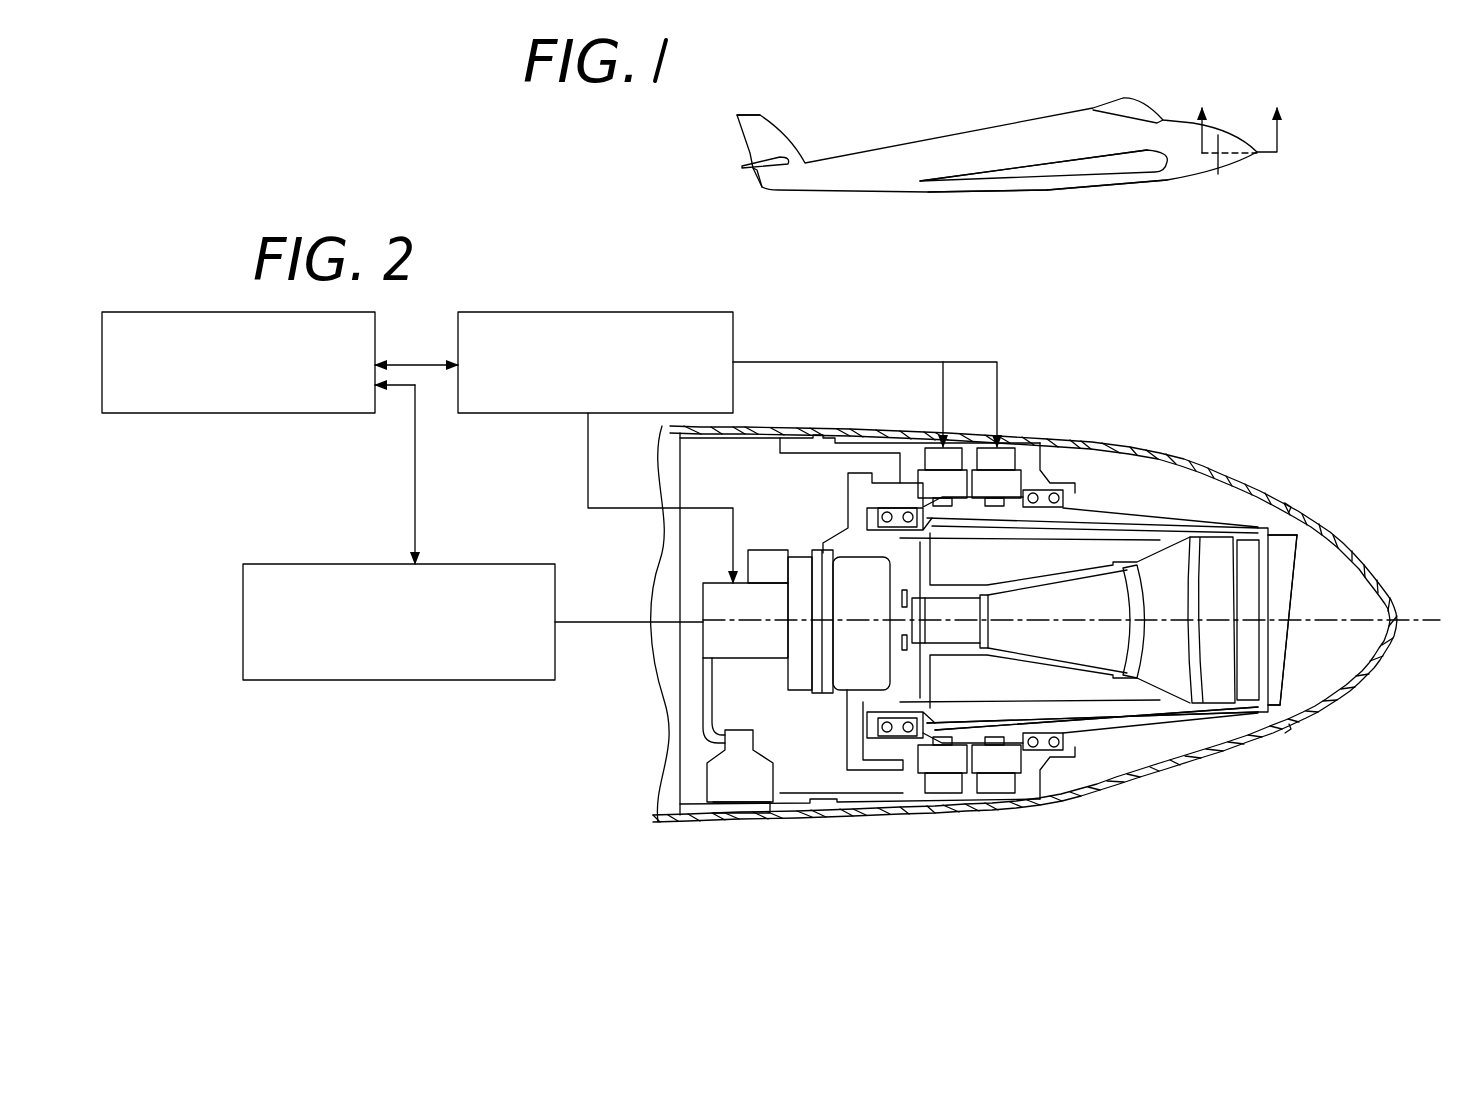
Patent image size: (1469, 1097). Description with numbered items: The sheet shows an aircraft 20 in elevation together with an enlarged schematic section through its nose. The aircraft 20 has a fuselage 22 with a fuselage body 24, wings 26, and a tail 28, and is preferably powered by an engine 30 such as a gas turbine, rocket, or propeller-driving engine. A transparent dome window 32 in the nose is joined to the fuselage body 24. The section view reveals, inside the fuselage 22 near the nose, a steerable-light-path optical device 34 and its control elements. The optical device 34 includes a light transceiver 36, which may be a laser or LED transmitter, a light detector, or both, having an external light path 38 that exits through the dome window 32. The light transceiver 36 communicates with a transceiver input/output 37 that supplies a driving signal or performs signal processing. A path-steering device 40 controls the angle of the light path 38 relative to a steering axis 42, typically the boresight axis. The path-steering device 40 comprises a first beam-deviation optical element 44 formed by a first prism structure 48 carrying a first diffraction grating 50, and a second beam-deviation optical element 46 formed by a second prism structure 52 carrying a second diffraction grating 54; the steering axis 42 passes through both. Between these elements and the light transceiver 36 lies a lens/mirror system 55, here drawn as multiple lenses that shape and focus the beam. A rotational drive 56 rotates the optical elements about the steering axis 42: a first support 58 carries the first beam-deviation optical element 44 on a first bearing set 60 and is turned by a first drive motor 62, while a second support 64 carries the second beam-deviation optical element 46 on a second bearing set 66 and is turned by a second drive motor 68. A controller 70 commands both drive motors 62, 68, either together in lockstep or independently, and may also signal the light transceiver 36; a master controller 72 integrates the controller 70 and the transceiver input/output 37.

In FIG. 1, the aircraft 20 is at (888, 100).
In FIG. 1, the fuselage 22 is at (882, 193).
In FIG. 1, the fuselage body 24 is at (1053, 190).
In FIG. 2, the fuselage body 24 is at (1050, 437).
In FIG. 1, the wings 26 is at (1041, 158).
In FIG. 1, the tail 28 is at (760, 115).
In FIG. 1, the engine 30 is at (755, 185).
In FIG. 1, the transparent dome window 32 is at (1257, 155).
In FIG. 2, the transparent dome window 32 is at (1382, 670).
In FIG. 2, the steerable-light-path optical device 34 is at (1167, 538).
In FIG. 2, the light transceiver 36 is at (848, 670).
In FIG. 2, the transceiver input/output 37 is at (397, 680).
In FIG. 2, the light path 38 is at (1020, 622).
In FIG. 2, the path-steering device 40 is at (1263, 727).
In FIG. 2, the steering axis 42 is at (1312, 622).
In FIG. 2, the first beam-deviation optical element 44 is at (1250, 537).
In FIG. 2, the second beam-deviation optical element 46 is at (1299, 533).
In FIG. 2, the first prism structure 48 is at (1250, 630).
In FIG. 2, the first diffraction grating 50 is at (1270, 672).
In FIG. 2, the second prism structure 52 is at (1293, 548).
In FIG. 2, the second diffraction grating 54 is at (1298, 578).
In FIG. 2, the lens/mirror system 55 is at (1120, 593).
In FIG. 2, the rotational drive 56 is at (1077, 745).
In FIG. 2, the first support 58 is at (1163, 710).
In FIG. 2, the first bearing set 60 is at (908, 737).
In FIG. 2, the first drive motor 62 is at (943, 775).
In FIG. 2, the second support 64 is at (1218, 718).
In FIG. 2, the second bearing set 66 is at (1062, 760).
In FIG. 2, the second drive motor 68 is at (998, 775).
In FIG. 2, the controller 70 is at (495, 413).
In FIG. 2, the master controller 72 is at (187, 413).